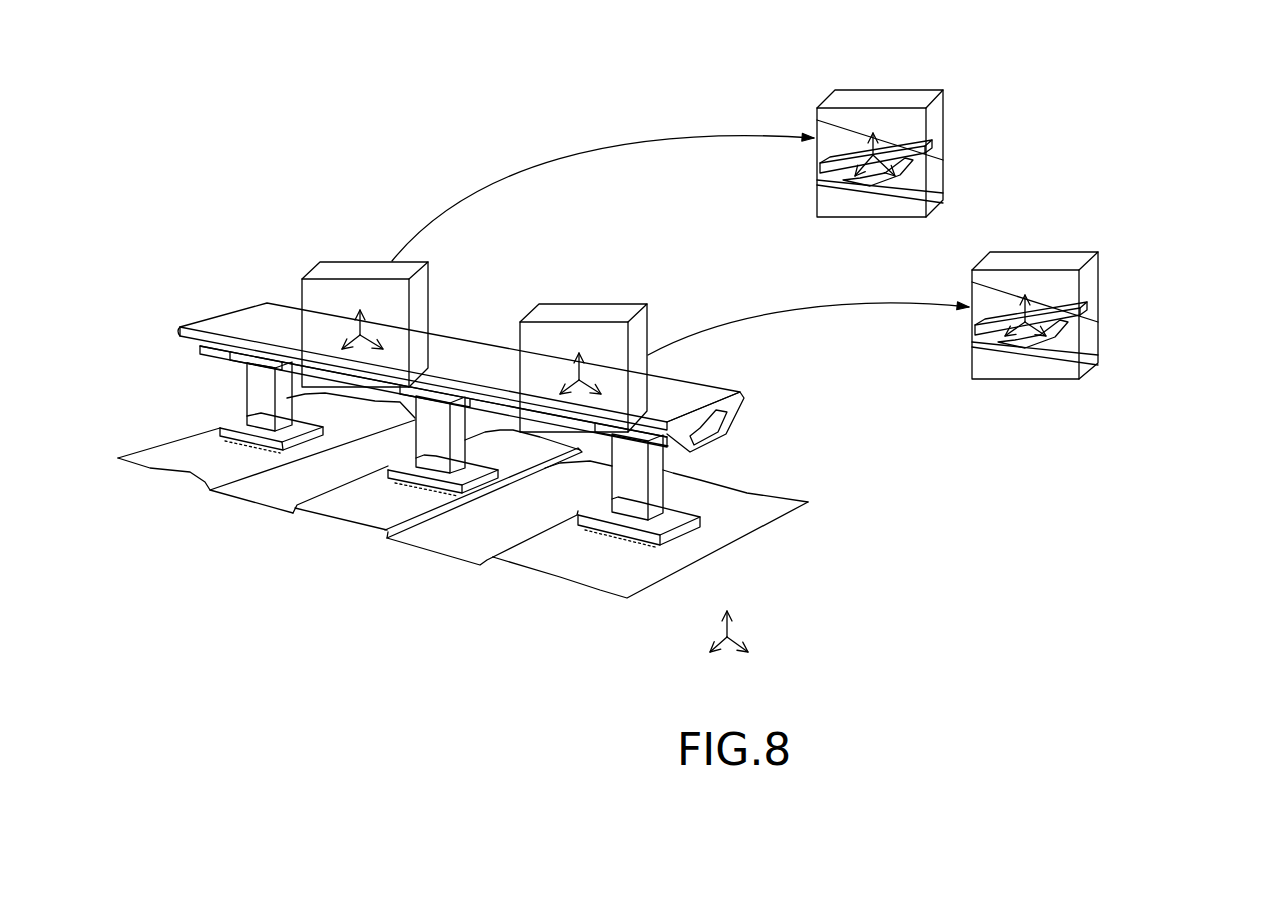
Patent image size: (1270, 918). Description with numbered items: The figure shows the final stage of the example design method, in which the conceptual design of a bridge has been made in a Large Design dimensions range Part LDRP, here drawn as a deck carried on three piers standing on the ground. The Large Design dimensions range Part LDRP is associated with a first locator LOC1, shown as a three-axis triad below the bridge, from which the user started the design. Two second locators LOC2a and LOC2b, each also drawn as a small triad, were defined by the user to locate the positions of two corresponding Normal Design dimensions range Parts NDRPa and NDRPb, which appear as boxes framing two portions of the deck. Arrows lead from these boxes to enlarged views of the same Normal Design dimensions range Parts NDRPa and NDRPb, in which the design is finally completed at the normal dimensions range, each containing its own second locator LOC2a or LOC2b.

The Large Design dimensions range Part LDRP is at (836, 448).
The Normal Design dimensions range Part NDRPa is at (347, 268).
The second locator LOC2a is at (373, 343).
The Normal Design dimensions range Part NDRPb is at (577, 310).
The second locator LOC2b is at (588, 382).
The first locator LOC1 is at (745, 635).